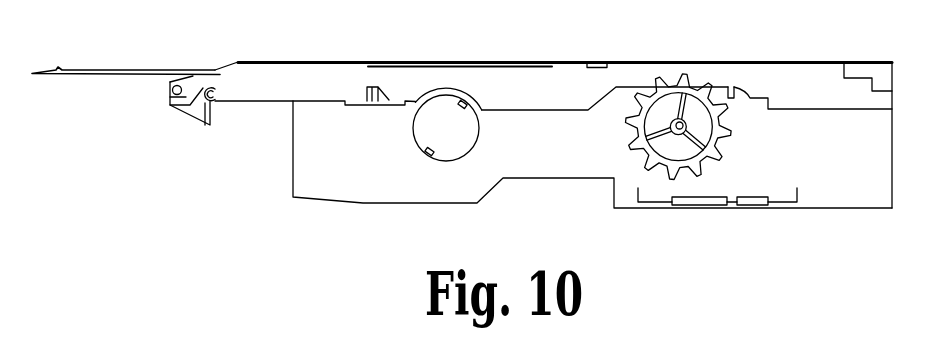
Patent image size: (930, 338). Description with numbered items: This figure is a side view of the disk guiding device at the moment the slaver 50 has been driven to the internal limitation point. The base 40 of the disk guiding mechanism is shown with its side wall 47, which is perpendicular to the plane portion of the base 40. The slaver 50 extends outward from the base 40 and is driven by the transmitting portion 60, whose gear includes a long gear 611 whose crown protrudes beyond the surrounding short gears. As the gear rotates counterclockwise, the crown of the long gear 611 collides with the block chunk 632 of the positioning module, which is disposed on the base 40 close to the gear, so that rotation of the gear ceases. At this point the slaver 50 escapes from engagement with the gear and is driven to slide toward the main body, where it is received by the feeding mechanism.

The base 40 is at (293, 166).
The side wall 47 is at (861, 182).
The slaver 50 is at (122, 70).
The transmitting portion 60 is at (634, 160).
The long gear 611 is at (738, 112).
The block chunk 632 is at (732, 98).